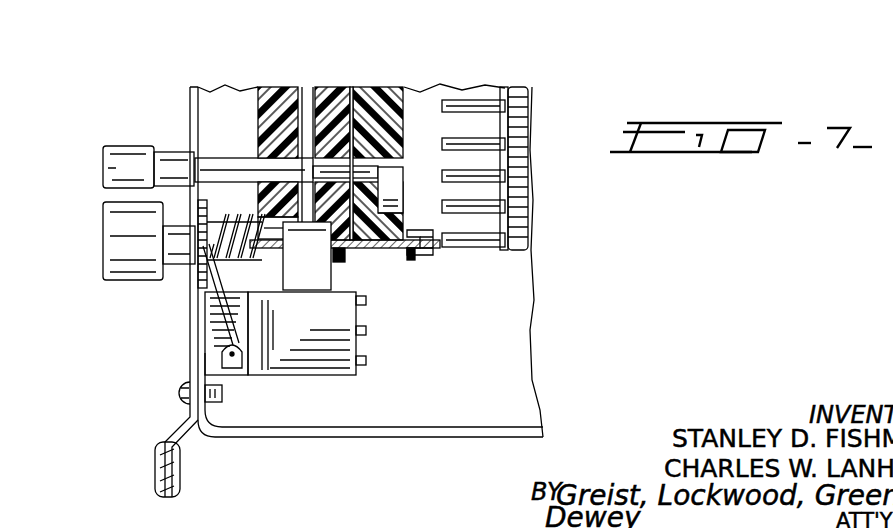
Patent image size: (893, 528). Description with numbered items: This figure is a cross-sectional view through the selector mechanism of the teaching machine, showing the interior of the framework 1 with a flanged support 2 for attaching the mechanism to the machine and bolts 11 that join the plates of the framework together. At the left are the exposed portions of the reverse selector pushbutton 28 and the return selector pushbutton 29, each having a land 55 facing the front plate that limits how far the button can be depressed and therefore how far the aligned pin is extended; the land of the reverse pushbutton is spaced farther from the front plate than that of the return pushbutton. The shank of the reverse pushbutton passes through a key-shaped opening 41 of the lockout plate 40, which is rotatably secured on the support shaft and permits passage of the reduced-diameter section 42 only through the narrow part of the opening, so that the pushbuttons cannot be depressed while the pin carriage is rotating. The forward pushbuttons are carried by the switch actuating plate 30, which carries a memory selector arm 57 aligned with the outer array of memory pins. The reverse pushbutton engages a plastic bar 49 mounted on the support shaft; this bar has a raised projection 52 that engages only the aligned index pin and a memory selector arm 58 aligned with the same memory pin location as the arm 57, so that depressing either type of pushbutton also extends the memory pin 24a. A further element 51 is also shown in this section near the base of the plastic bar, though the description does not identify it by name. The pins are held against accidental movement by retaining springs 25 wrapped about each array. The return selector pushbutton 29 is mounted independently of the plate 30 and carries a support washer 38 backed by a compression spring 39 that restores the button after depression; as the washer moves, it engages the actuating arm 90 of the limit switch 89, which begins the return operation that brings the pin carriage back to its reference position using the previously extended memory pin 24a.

The framework 1 is at (182, 346).
The flanged support 2 is at (166, 432).
The bolt 11 is at (178, 392).
The memory pin 24a is at (478, 244).
The retaining spring 25 is at (520, 102).
The reverse selector pushbutton 28 is at (116, 164).
The return selector pushbutton 29 is at (114, 258).
The switch actuating plate 30 is at (284, 86).
The support washer 38 is at (228, 174).
The compression spring 39 is at (251, 254).
The lockout plate 40 is at (337, 87).
The key-shaped opening 41 is at (332, 254).
The reduced-diameter section 42 is at (381, 168).
The plastic bar 49 is at (396, 104).
The base plate 51 is at (386, 250).
The raised projection 52 is at (394, 212).
The land 55 is at (154, 154).
The memory selector arm 57 is at (420, 248).
The memory selector arm 58 is at (418, 232).
The limit switch 89 is at (277, 333).
The actuating arm 90 is at (212, 290).